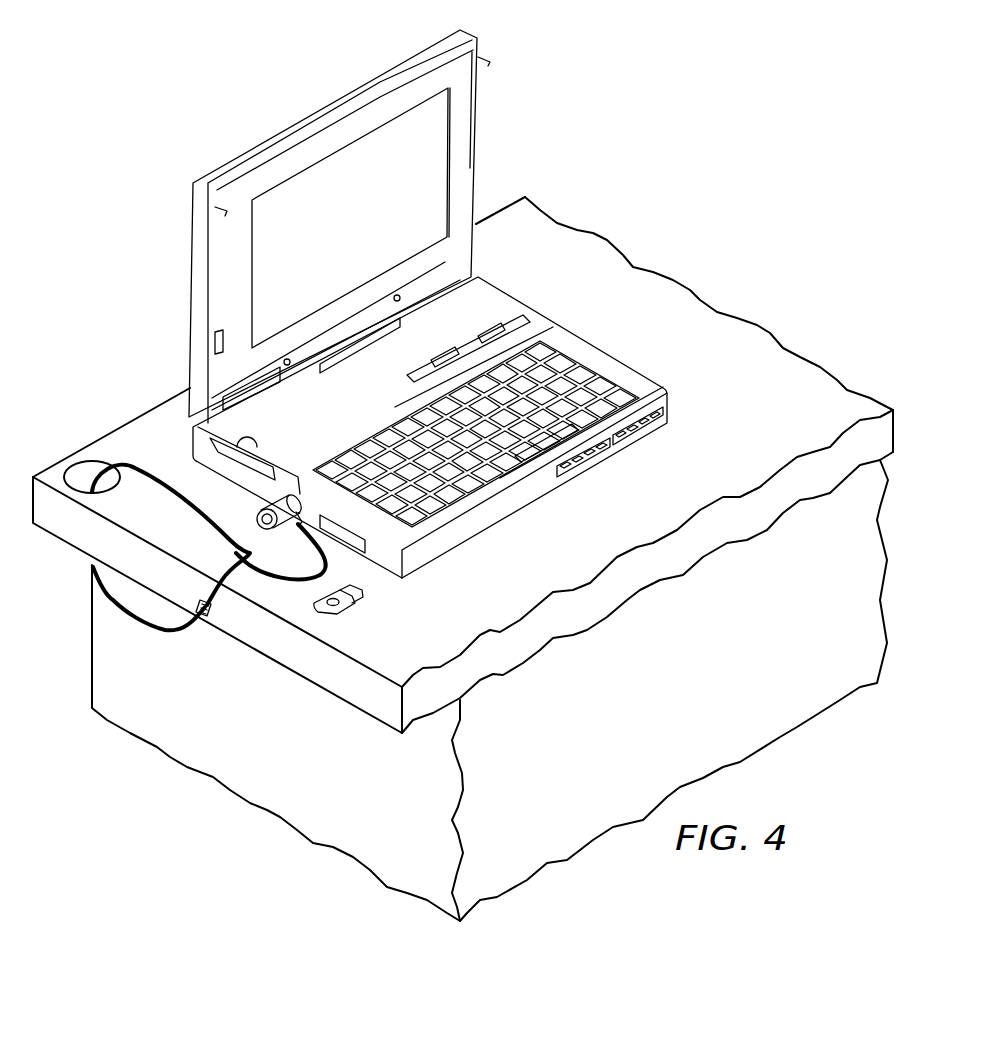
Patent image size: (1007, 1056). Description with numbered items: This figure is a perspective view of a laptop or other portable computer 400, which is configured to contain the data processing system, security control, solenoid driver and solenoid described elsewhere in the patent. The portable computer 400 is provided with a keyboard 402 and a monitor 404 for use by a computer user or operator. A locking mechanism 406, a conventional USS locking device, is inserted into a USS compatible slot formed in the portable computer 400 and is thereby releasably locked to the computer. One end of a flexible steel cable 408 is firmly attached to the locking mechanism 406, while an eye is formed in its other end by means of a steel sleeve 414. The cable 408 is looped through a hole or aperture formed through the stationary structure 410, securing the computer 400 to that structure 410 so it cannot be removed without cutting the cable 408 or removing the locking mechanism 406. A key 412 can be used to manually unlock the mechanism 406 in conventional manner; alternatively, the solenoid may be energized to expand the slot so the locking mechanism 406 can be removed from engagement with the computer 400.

The portable computer 400 is at (545, 295).
The keyboard 402 is at (592, 372).
The monitor 404 is at (435, 192).
The locking mechanism 406 is at (302, 522).
The flexible steel cable 408 is at (160, 632).
The stationary structure 410 is at (127, 438).
The key 412 is at (350, 617).
The steel sleeve 414 is at (213, 612).